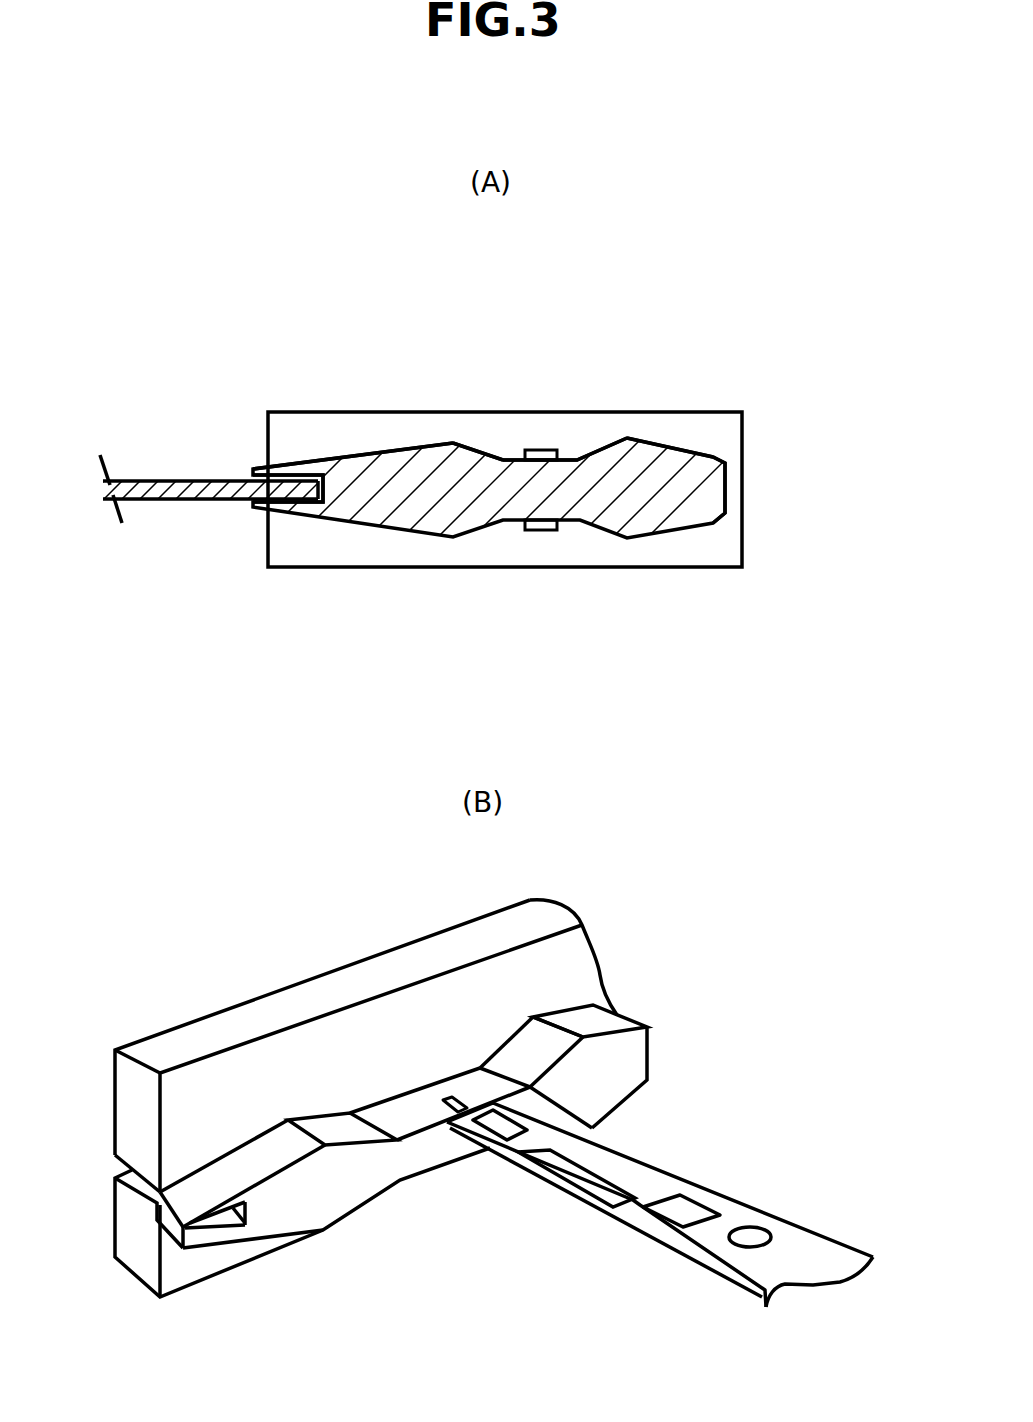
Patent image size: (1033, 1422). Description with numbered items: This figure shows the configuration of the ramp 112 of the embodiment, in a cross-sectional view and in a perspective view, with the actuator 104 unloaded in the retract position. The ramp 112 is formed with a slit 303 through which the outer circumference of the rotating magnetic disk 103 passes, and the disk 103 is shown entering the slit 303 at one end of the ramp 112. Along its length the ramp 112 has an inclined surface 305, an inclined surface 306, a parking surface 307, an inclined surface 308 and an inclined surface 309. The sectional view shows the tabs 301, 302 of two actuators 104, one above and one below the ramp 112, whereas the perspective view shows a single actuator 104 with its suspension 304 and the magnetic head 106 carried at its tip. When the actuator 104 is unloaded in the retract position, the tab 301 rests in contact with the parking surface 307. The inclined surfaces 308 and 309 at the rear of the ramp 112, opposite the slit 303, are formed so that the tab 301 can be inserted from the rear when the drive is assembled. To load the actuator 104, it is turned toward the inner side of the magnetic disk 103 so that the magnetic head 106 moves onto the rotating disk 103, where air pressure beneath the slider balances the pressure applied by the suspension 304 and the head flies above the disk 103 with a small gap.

The ramp 112 is at (282, 410).
The magnetic disk 103 is at (149, 482).
The actuator 104 is at (713, 1245).
The magnetic head 106 is at (447, 1097).
The tab 301 is at (543, 450).
The tab 302 is at (545, 530).
The slit 303 is at (285, 507).
The suspension 304 is at (602, 1183).
The inclined surface 305 is at (392, 447).
The inclined surface 306 is at (475, 450).
The parking surface 307 is at (577, 460).
The inclined surface 308 is at (607, 447).
The inclined surface 309 is at (687, 450).